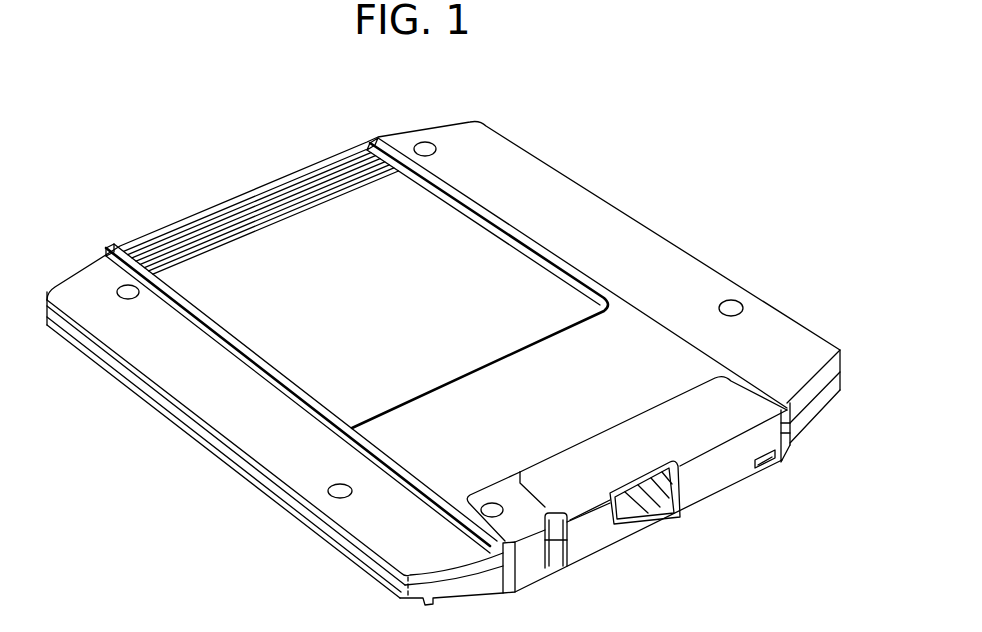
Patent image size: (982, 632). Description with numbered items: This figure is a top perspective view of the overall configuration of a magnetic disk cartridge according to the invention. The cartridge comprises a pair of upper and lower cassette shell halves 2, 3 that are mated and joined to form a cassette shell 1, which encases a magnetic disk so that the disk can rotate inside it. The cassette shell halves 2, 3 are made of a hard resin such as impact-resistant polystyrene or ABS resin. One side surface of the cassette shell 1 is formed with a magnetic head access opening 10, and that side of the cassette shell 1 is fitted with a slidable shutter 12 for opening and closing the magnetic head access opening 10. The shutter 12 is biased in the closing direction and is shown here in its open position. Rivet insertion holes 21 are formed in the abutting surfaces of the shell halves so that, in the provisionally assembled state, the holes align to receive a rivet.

The cassette shell 1 is at (800, 307).
The upper cassette shell half 2 is at (697, 280).
The lower cassette shell half 3 is at (817, 410).
The magnetic head access opening 10 is at (622, 512).
The shutter 12 is at (710, 490).
The rivet insertion hole 21 is at (433, 147).